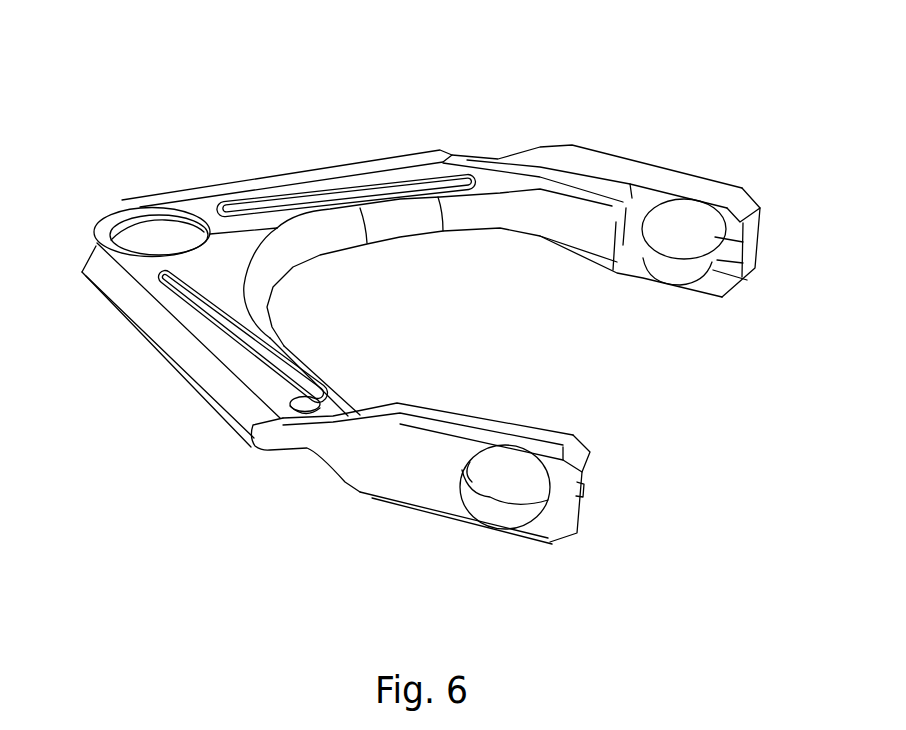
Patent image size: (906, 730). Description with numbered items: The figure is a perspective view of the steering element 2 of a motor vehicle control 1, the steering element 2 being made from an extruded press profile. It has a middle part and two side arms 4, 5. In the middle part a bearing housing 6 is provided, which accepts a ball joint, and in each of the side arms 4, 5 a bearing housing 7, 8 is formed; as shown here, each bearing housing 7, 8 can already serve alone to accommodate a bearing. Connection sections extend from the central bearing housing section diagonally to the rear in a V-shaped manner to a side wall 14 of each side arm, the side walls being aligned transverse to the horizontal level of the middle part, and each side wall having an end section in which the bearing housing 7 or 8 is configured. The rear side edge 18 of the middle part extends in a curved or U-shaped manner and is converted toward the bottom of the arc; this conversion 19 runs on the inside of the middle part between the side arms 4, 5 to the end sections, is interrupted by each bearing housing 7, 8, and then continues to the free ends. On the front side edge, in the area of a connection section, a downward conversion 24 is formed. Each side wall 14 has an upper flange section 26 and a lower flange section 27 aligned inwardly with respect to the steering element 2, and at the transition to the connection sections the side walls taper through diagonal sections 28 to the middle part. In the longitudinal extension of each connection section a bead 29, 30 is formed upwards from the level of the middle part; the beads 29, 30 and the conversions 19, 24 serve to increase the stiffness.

The motor vehicle control 1 is at (250, 107).
The steering element 2 is at (302, 170).
The side arm 4 is at (650, 158).
The side arm 5 is at (362, 475).
The bearing housing 6 is at (133, 212).
The bearing housing 7 is at (677, 280).
The bearing housing 8 is at (505, 522).
The side wall 14 is at (437, 497).
The rear side edge 18 is at (322, 262).
The conversion 19 is at (422, 231).
The conversion 24 is at (132, 325).
The upper flange section 26 is at (513, 430).
The lower flange section 27 is at (707, 290).
The diagonal section 28 is at (320, 465).
The bead 29 is at (377, 172).
The bead 30 is at (247, 350).